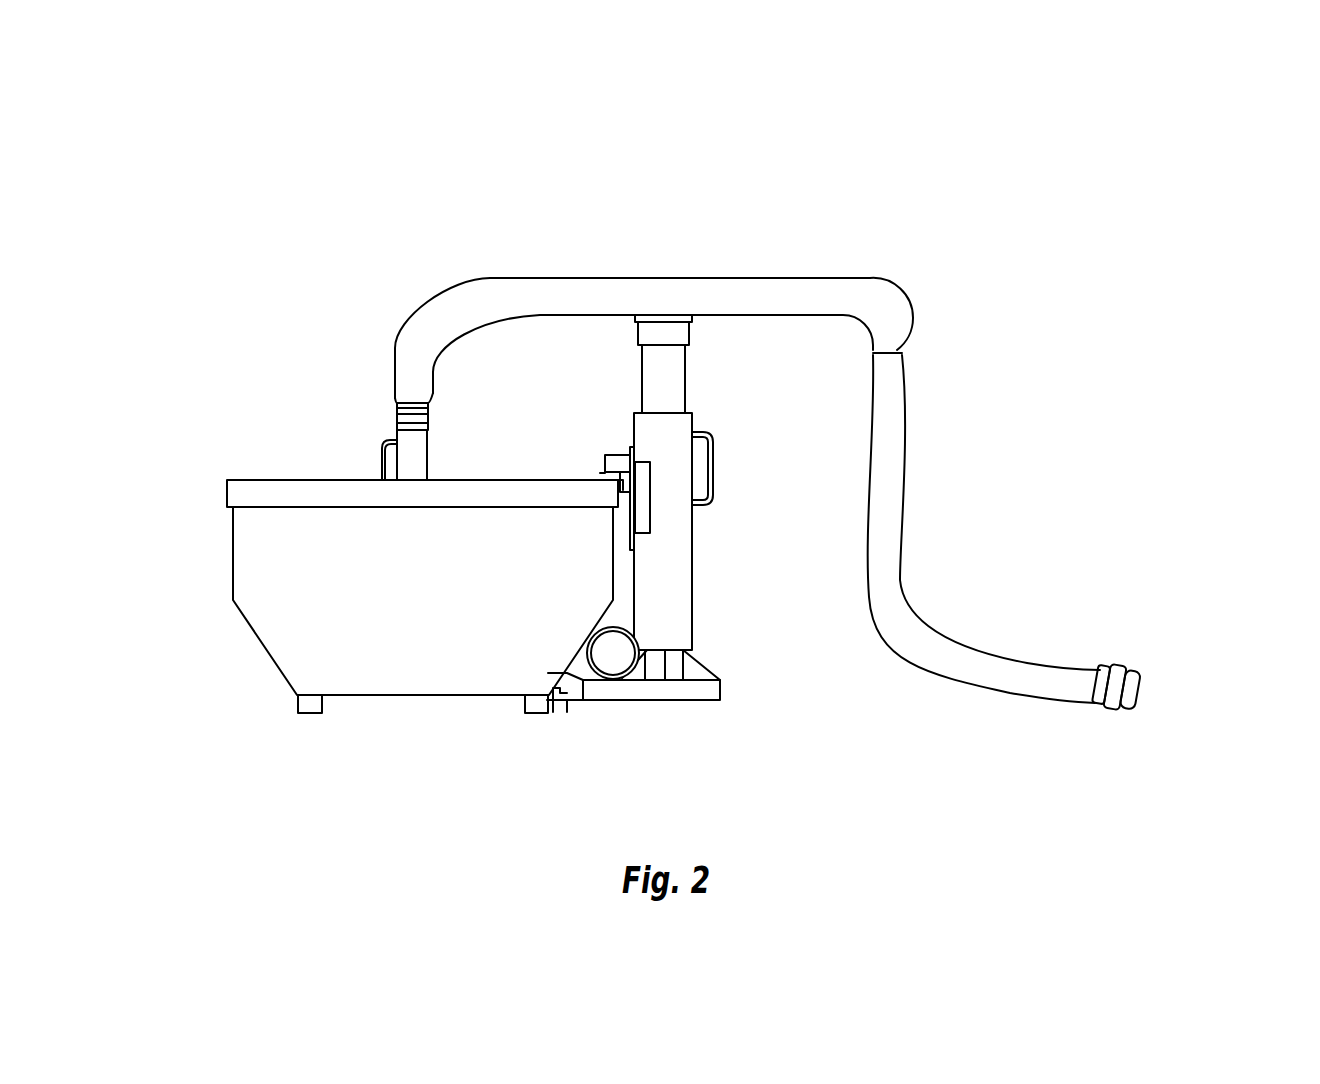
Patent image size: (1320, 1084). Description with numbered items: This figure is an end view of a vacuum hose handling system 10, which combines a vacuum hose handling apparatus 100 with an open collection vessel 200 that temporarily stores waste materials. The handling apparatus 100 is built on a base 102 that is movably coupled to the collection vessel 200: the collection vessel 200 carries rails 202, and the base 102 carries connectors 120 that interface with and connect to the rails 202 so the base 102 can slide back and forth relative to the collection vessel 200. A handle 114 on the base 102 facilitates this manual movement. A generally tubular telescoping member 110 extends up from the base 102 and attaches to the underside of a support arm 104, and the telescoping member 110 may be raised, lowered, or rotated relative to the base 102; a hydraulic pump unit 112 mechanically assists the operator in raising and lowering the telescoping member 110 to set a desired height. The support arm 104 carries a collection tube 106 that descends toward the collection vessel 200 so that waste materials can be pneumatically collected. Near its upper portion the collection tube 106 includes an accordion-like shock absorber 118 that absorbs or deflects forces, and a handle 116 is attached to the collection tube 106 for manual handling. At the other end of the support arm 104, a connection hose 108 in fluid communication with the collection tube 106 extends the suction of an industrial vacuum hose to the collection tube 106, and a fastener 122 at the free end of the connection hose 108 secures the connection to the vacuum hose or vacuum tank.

The vacuum hose handling system 10 is at (305, 168).
The vacuum hose handling apparatus 100 is at (840, 212).
The base 102 is at (693, 544).
The support arm 104 is at (595, 278).
The collection tube 106 is at (427, 456).
The connection hose 108 is at (1037, 667).
The telescoping member 110 is at (678, 376).
The hydraulic pump unit 112 is at (637, 667).
The handle 114 is at (713, 462).
The handle 116 is at (382, 460).
The shock absorber 118 is at (397, 415).
The connectors 120 is at (615, 455).
The fastener 122 is at (1137, 688).
The open collection vessel 200 is at (245, 455).
The rails 202 is at (600, 473).